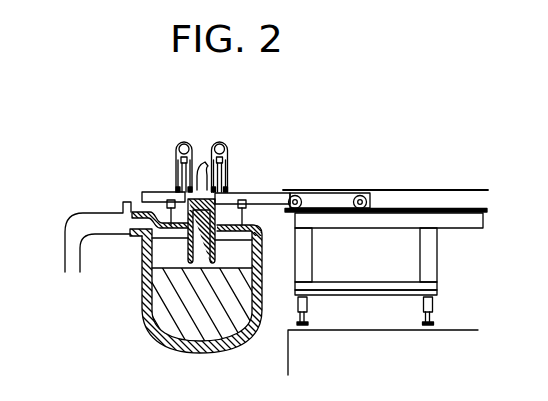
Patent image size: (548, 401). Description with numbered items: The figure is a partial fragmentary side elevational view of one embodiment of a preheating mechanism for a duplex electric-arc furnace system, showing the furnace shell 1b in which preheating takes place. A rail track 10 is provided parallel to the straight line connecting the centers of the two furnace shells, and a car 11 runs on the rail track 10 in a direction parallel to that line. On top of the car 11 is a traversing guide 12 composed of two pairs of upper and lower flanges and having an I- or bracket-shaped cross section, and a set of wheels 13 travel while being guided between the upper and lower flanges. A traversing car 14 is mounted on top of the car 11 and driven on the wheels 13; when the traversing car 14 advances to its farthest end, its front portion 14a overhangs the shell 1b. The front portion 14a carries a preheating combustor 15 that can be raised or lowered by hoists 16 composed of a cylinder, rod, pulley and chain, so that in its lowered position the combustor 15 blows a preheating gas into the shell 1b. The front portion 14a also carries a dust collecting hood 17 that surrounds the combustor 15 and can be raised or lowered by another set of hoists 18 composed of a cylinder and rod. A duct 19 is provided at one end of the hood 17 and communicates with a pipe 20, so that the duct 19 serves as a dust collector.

The furnace shell 1b is at (140, 298).
The rail track 10 is at (307, 317).
The car 11 is at (433, 262).
The traversing guide 12 is at (418, 176).
The wheels 13 is at (360, 193).
The traversing car 14 is at (269, 192).
The front portion 14a is at (163, 190).
The preheating combustor 15 is at (190, 258).
The hoists 16 is at (185, 141).
The dust collecting hood 17 is at (253, 226).
The hoists 18 is at (245, 192).
The duct 19 is at (132, 206).
The pipe 20 is at (103, 212).